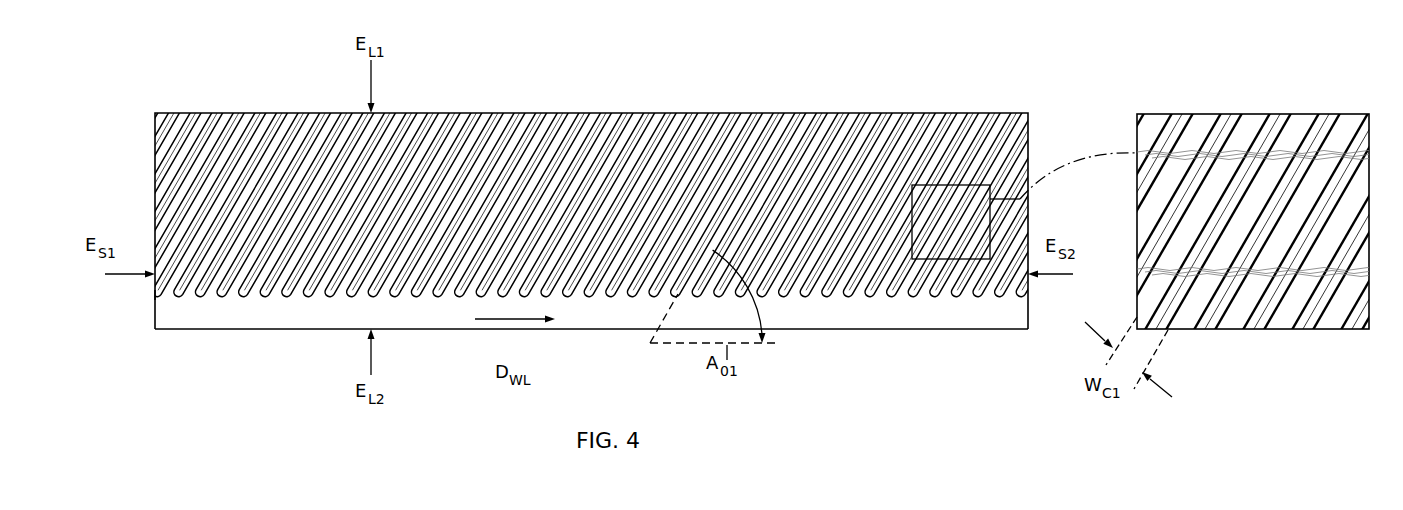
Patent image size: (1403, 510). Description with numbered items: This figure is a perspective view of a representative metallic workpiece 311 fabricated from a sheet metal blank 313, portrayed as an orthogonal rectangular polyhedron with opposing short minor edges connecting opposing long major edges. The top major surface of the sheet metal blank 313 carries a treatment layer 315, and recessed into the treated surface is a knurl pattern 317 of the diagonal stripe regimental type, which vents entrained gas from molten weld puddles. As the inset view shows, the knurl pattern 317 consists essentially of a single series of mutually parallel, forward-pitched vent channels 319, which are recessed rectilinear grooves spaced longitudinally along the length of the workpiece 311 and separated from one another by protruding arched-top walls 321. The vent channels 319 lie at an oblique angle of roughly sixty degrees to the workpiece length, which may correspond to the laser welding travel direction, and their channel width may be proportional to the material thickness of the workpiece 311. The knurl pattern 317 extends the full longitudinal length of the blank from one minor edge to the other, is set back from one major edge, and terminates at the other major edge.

The workpiece 311 is at (178, 70).
The sheet metal blank 313 is at (154, 298).
The treatment layer 315 is at (217, 317).
The knurl pattern 317 is at (316, 166).
The vent channels 319 is at (1166, 123).
The arched-top walls 321 is at (1217, 302).